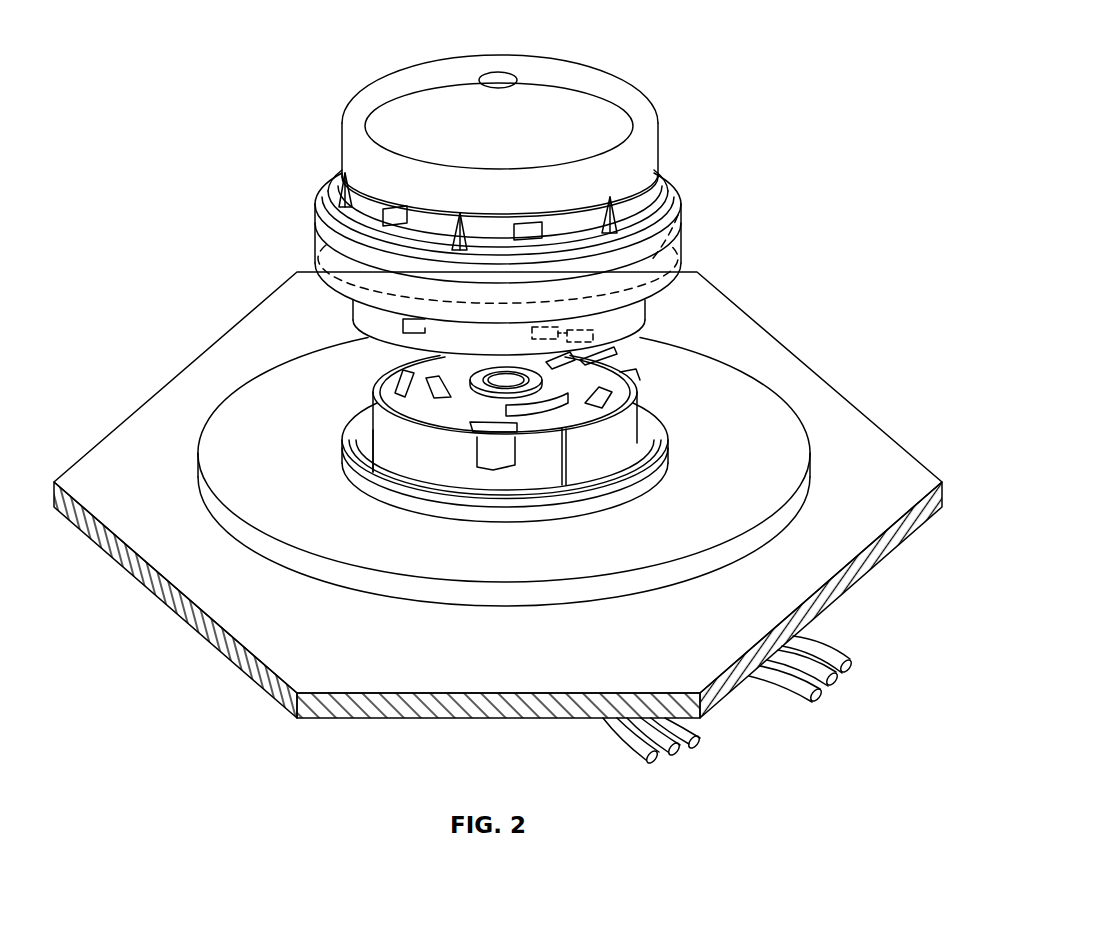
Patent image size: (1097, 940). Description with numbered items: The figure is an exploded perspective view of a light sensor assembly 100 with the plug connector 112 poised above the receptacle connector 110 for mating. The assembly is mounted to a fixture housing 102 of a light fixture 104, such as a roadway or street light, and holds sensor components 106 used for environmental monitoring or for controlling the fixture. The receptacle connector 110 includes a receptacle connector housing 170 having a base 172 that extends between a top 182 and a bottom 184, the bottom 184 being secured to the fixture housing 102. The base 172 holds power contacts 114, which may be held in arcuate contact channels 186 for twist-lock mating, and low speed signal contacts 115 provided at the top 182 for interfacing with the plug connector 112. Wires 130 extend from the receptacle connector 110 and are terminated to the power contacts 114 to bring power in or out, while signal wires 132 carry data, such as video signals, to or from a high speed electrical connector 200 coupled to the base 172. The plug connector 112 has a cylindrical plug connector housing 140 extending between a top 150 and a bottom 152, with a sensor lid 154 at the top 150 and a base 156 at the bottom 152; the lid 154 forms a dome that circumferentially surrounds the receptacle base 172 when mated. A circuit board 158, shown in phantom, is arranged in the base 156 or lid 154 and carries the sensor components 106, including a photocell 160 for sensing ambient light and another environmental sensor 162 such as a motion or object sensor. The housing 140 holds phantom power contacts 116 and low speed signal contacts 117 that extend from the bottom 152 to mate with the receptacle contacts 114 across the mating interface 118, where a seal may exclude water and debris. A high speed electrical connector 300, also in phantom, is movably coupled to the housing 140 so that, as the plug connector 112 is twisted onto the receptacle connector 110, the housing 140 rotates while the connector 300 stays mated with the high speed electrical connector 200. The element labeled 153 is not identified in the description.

The light sensor assembly 100 is at (250, 55).
The fixture housing 102 is at (195, 628).
The light fixture 104 is at (860, 447).
The sensor components 106 is at (363, 197).
The receptacle connector 110 is at (687, 412).
The plug connector 112 is at (712, 135).
The power contacts 114 is at (423, 387).
The low speed signal contacts 115 is at (487, 437).
The power contacts 116 is at (678, 215).
The low speed signal contacts 117 is at (398, 333).
The mating interface 118 is at (598, 343).
The wires 130 is at (826, 657).
The signal wires 132 is at (632, 740).
The plug connector housing 140 is at (378, 212).
The top 150 is at (582, 81).
The bottom 152 is at (617, 365).
The top surface of cap 153 is at (638, 120).
The sensor lid 154 is at (378, 112).
The base 156 is at (672, 250).
The circuit board 158 is at (322, 252).
The photocell 160 is at (528, 223).
The environmental sensor 162 is at (398, 207).
The receptacle connector housing 170 is at (380, 444).
The base 172 is at (455, 488).
The top 182 is at (410, 458).
The bottom 184 is at (467, 427).
The contact channels 186 is at (563, 410).
The high speed electrical connector 200 is at (615, 402).
The high speed electrical connector 300 is at (605, 331).